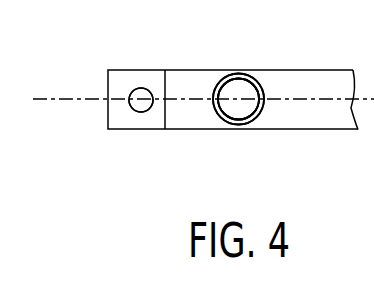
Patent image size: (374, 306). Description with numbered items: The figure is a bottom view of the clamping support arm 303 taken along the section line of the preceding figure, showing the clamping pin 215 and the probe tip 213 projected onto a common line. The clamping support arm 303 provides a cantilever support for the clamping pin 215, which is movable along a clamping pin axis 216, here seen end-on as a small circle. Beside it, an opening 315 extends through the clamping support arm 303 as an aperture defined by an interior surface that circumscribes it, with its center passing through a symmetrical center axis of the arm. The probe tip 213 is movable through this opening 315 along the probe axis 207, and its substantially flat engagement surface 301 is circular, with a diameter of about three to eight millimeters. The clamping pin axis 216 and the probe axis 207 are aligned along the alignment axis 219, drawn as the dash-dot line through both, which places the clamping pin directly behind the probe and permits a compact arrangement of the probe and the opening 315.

The alignment axis 219 is at (80, 95).
The clamping pin axis 216 is at (141, 100).
The clamping pin 215 is at (141, 100).
The clamping support arm 303 is at (195, 70).
The probe axis 207 is at (239, 98).
The probe tip 213 is at (242, 93).
The engagement surface 301 is at (233, 112).
The opening 315 is at (239, 122).